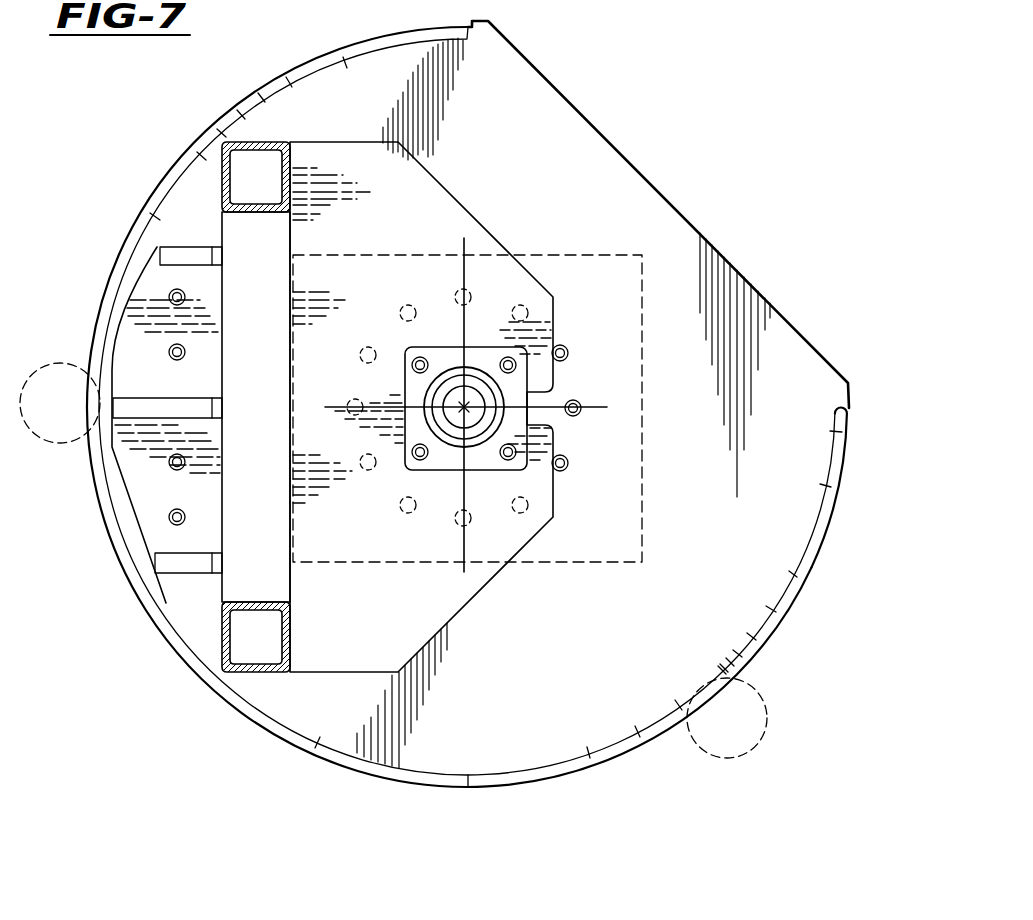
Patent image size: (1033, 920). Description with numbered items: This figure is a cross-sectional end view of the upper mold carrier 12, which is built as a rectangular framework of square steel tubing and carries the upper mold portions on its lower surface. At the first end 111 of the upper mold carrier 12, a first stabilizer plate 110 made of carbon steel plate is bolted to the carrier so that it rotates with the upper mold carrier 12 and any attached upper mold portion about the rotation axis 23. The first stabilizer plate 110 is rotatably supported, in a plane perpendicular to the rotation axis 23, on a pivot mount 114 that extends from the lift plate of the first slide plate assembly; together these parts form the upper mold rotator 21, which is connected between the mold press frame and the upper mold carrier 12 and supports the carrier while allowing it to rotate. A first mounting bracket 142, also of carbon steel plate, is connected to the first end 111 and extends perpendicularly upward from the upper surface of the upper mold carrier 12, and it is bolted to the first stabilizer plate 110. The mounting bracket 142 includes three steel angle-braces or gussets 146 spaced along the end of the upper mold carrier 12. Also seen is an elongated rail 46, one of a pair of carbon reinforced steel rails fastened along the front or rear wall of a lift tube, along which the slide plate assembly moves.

The upper mold carrier 12 is at (212, 628).
The upper mold rotator 21 is at (850, 461).
The rotation axis 23 is at (457, 417).
The elongated rail 46 is at (658, 253).
The first stabilizer plate 110 is at (772, 585).
The first end of the upper mold carrier 111 is at (167, 543).
The pivot mount 114 is at (470, 395).
The first mounting bracket 142 is at (133, 470).
The gusset 146 is at (178, 253).